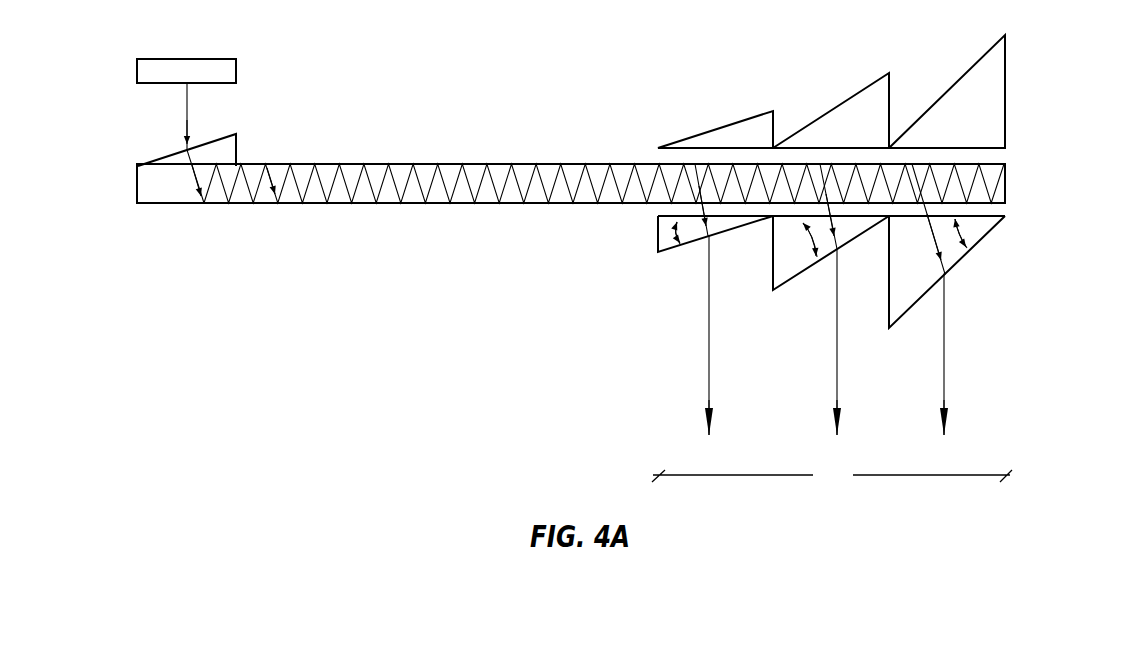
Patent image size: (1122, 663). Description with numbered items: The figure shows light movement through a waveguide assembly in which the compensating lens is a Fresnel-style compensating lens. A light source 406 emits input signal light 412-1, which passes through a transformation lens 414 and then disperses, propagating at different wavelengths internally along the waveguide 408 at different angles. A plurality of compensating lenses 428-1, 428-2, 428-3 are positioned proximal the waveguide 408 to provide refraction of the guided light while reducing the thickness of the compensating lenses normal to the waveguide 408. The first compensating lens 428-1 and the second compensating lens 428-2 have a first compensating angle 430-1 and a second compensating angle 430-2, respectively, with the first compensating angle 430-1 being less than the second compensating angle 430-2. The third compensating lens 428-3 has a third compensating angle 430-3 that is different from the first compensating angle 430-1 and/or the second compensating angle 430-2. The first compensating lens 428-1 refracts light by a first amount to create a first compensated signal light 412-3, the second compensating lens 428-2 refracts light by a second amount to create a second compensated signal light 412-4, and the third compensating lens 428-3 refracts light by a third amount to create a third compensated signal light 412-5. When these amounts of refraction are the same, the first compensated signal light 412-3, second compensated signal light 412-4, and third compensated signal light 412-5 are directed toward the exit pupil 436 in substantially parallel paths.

The light source 406 is at (233, 58).
The waveguide 408 is at (1002, 162).
The input signal light 412-1 is at (187, 117).
The first compensated signal light 412-3 is at (709, 365).
The second compensated signal light 412-4 is at (837, 365).
The third compensated signal light 412-5 is at (944, 365).
The transformation lens 414 is at (141, 150).
The first compensating lens 428-1 is at (654, 237).
The second compensating lens 428-2 is at (769, 243).
The third compensating lens 428-3 is at (972, 256).
The first compensating angle 430-1 is at (674, 233).
The second compensating angle 430-2 is at (810, 243).
The third compensating angle 430-3 is at (962, 231).
The exit pupil 436 is at (832, 476).